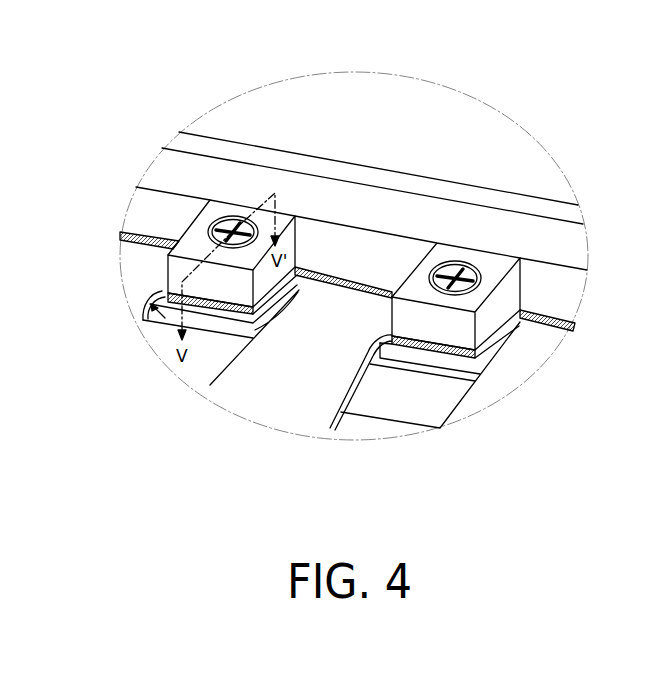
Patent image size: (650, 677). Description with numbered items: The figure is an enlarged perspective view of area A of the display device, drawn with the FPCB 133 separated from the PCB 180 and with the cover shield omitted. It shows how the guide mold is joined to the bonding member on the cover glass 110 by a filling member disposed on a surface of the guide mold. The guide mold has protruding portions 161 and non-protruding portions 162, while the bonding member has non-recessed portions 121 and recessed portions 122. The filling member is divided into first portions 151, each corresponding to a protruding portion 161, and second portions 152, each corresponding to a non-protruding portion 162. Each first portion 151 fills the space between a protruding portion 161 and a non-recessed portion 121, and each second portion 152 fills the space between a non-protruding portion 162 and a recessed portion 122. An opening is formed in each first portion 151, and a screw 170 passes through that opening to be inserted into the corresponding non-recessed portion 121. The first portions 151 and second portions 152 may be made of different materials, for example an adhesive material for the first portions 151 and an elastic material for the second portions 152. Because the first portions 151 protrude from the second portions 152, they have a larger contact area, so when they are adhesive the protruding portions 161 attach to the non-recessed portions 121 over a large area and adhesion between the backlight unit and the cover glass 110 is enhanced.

The cover glass 110 is at (159, 324).
The non-recessed portion 121 is at (158, 298).
The recessed portion 122 is at (368, 365).
The FPCB 133 is at (308, 405).
The first portion 151 is at (226, 306).
The second portion 152 is at (325, 273).
The protruding portion 161 is at (190, 222).
The non-protruding portion 162 is at (402, 207).
The screw 170 is at (232, 228).
The PCB 180 is at (313, 104).
The area A is at (524, 142).